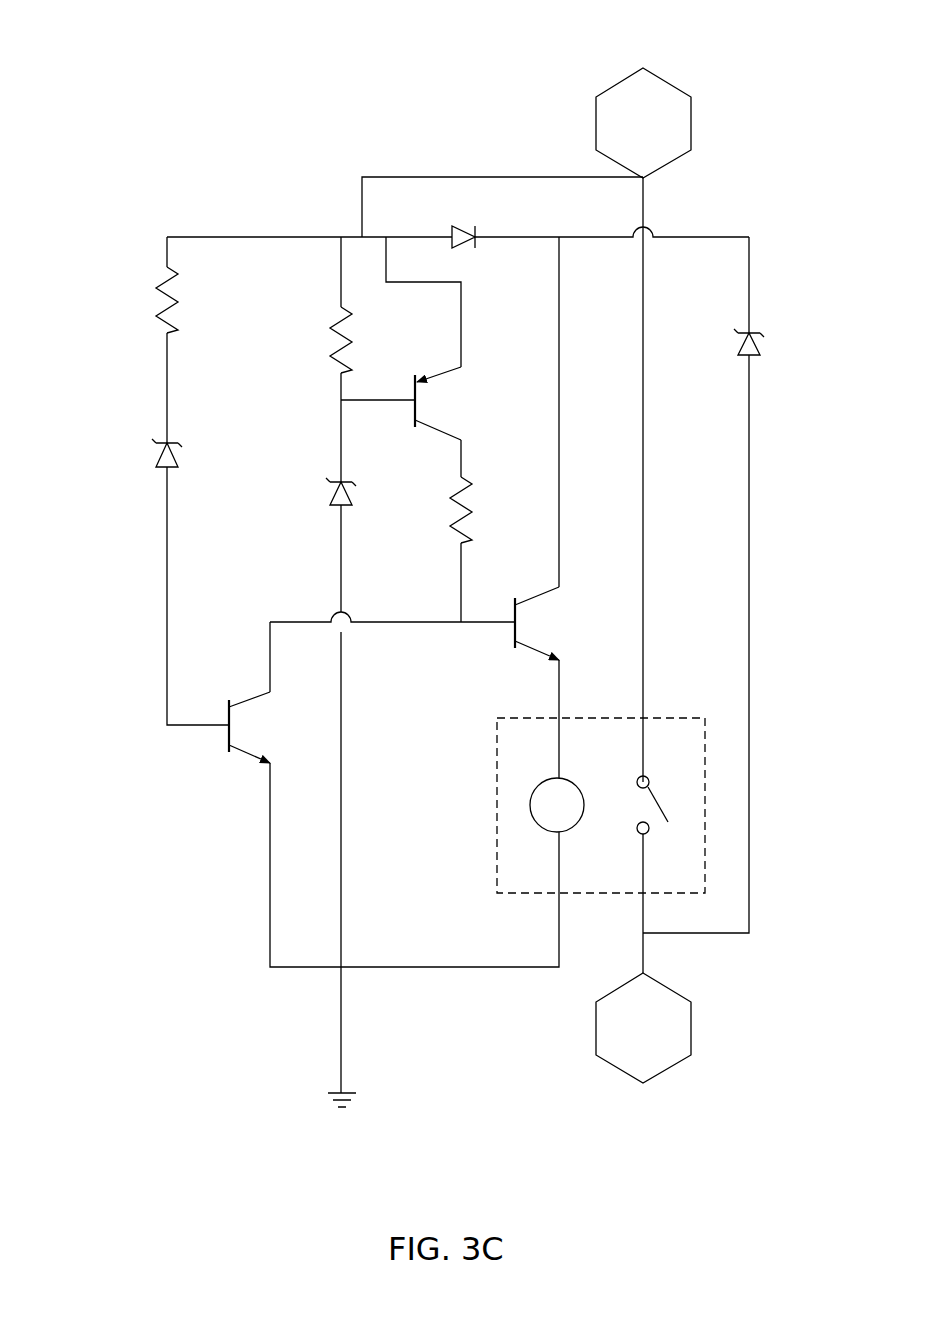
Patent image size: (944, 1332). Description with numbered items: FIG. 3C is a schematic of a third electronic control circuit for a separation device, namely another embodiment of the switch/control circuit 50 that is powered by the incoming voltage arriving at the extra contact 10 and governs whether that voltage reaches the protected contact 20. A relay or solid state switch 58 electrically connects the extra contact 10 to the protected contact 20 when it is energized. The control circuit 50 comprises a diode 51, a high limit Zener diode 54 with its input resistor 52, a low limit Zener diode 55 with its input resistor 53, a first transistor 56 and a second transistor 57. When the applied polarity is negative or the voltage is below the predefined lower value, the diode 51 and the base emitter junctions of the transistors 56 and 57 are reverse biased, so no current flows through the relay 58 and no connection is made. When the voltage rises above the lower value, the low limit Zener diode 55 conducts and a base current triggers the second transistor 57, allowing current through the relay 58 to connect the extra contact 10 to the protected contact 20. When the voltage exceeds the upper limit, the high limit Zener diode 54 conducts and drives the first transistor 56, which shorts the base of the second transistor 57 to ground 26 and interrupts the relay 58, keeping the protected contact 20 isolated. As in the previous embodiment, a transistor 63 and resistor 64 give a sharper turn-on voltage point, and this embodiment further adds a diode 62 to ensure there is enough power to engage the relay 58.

The extra contact 10 is at (683, 118).
The protected contact 20 is at (683, 1012).
The ground 26 is at (336, 1118).
The switch/control circuit 50 is at (195, 42).
The diode 51 is at (468, 224).
The input resistor 52 is at (150, 291).
The input resistor 53 is at (325, 328).
The high limit Zener diode 54 is at (148, 432).
The low limit Zener diode 55 is at (325, 470).
The first transistor 56 is at (265, 722).
The second transistor 57 is at (540, 625).
The relay or solid state switch 58 is at (568, 782).
The diode 62 is at (765, 343).
The transistor 63 is at (458, 405).
The resistor 64 is at (478, 475).